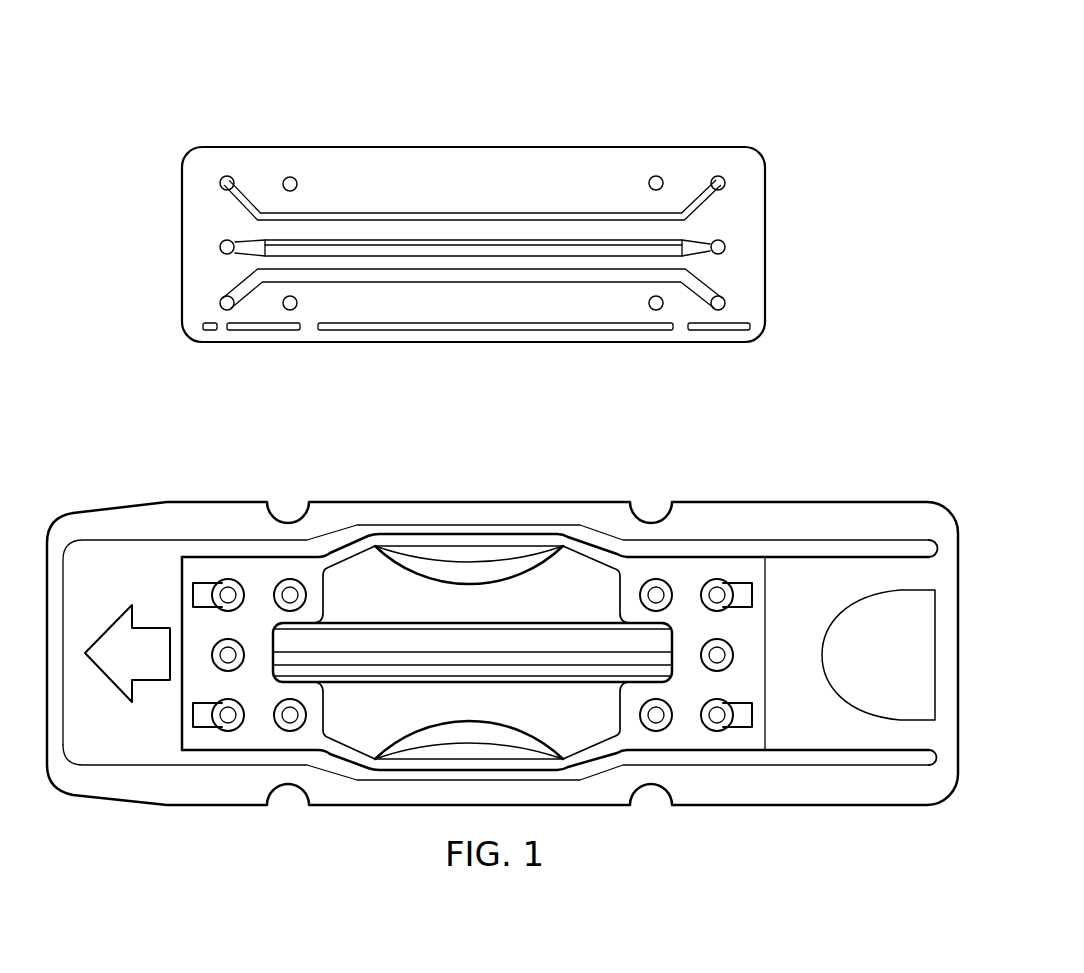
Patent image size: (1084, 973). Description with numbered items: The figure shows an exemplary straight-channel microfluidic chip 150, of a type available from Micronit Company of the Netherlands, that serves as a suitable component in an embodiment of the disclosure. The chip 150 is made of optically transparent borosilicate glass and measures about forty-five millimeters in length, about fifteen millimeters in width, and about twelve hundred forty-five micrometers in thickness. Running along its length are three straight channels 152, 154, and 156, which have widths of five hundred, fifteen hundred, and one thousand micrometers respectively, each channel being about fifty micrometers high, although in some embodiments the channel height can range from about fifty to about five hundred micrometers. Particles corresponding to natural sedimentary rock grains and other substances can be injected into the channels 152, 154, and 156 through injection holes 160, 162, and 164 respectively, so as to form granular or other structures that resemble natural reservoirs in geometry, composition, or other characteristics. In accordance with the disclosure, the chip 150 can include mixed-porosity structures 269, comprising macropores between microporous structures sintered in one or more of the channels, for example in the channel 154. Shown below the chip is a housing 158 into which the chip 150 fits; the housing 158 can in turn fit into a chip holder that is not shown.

The straight-channel microfluidic chip 150 is at (583, 68).
The channel 152 is at (380, 213).
The channel 154 is at (442, 240).
The channel 156 is at (518, 268).
The mixed-porosity structures 269 is at (600, 247).
The injection hole 160 is at (727, 183).
The injection hole 162 is at (727, 247).
The injection hole 164 is at (727, 305).
The housing 158 is at (254, 464).